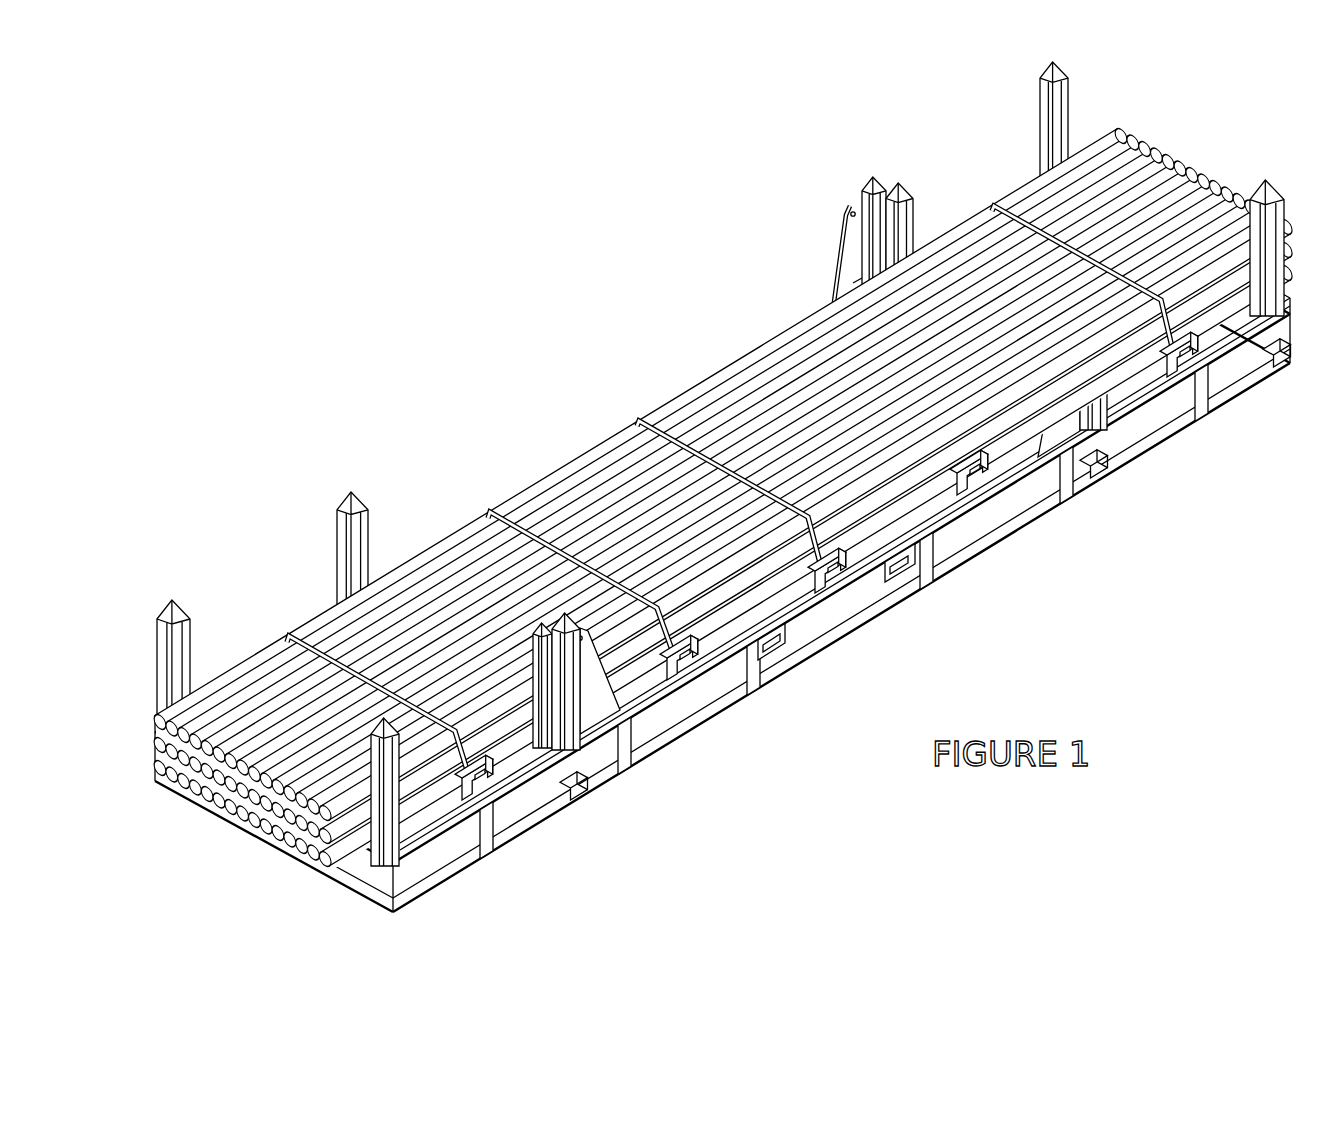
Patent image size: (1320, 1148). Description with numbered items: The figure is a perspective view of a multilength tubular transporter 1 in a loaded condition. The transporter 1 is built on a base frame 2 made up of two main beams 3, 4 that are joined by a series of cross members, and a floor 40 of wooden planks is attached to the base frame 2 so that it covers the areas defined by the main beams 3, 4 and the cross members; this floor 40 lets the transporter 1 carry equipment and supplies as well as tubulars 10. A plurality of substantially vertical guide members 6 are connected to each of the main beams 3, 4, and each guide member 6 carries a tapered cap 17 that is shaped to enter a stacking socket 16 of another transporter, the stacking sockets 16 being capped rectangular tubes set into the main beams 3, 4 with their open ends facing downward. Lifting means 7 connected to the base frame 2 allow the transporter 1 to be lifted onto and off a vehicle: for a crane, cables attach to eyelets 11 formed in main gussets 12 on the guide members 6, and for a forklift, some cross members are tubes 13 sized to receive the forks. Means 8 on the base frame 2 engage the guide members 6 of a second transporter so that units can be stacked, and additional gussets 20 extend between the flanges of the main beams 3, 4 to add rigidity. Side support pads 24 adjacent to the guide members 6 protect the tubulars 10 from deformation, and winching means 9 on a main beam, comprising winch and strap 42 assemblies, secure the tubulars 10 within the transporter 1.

The multilength tubular transporter 1 is at (530, 378).
The base frame 2 is at (722, 530).
The main beam 3 is at (155, 745).
The main beam 4 is at (853, 633).
The guide member 6 is at (343, 506).
The lifting means 7 is at (818, 233).
The stacking engagement means 8 is at (580, 813).
The winching means 9 is at (660, 692).
The tubulars 10 is at (460, 537).
The eyelet 11 is at (858, 207).
The main gusset 12 is at (853, 277).
The tube 13 is at (890, 577).
The stacking socket 16 is at (568, 800).
The tapered cap 17 is at (877, 178).
The gusset 20 is at (1058, 477).
The side support pad 24 is at (910, 207).
The floor 40 is at (353, 867).
The strap 42 is at (645, 420).